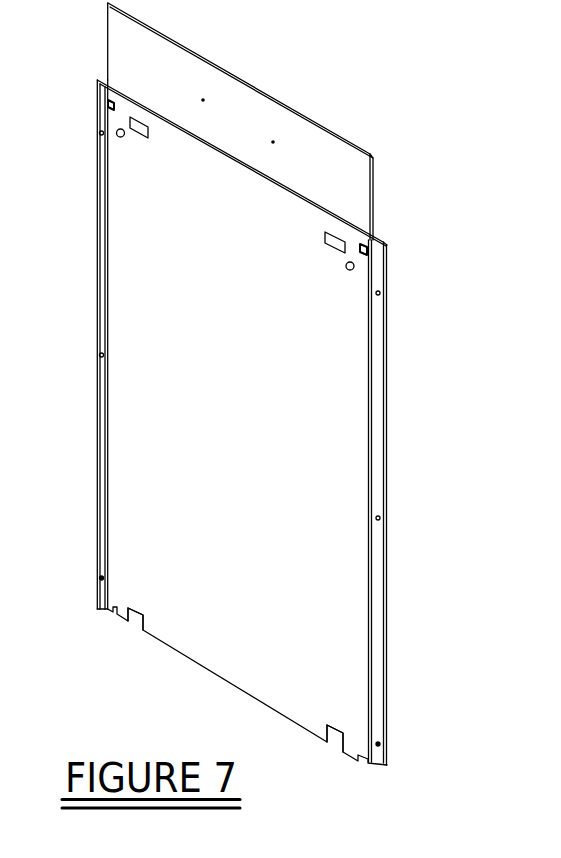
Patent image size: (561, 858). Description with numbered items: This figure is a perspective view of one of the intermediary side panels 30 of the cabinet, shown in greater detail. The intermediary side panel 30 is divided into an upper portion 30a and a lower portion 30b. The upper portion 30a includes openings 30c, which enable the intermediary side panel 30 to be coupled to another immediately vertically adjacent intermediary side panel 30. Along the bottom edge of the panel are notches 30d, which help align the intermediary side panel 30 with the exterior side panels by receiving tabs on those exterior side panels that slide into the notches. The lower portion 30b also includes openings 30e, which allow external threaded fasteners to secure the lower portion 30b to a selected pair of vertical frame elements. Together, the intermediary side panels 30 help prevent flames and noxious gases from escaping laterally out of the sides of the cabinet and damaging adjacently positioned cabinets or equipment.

The intermediary side panel 30 is at (202, 408).
The upper portion 30a is at (248, 137).
The lower portion 30b is at (143, 375).
The openings 30c is at (131, 60).
The notches 30d is at (137, 623).
The openings 30e is at (100, 578).